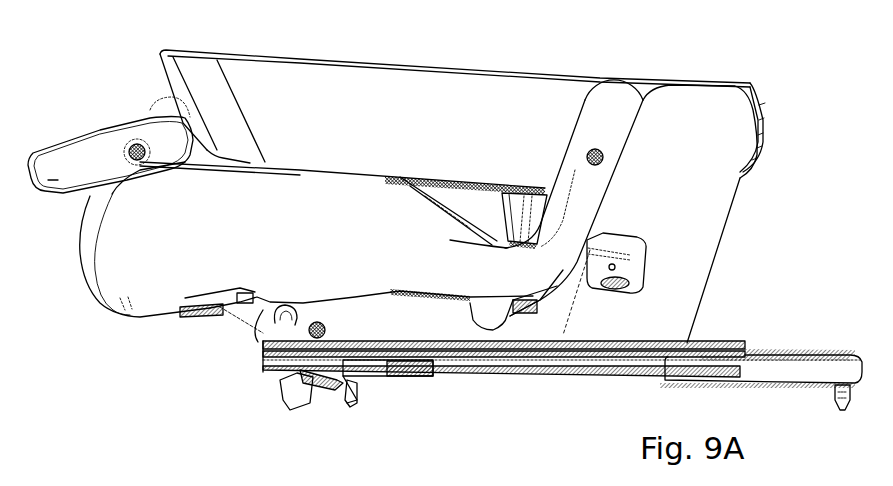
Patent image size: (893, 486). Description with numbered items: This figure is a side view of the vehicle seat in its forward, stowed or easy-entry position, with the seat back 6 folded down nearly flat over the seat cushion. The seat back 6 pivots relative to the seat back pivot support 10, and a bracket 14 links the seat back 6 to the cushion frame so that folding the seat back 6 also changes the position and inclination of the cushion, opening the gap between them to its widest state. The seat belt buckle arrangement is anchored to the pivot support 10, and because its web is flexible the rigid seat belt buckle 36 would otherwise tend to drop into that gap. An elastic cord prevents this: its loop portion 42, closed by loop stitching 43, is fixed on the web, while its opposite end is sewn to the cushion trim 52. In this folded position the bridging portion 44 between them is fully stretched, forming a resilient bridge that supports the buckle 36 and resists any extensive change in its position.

The seat back 6 is at (333, 84).
The seat back pivot support 10 is at (693, 264).
The bracket 14 is at (553, 270).
The seat belt buckle 36 is at (517, 214).
The loop portion 42 is at (545, 235).
The loop stitching 43 is at (500, 242).
The bridging portion 44 is at (470, 230).
The cushion trim 52 is at (183, 260).